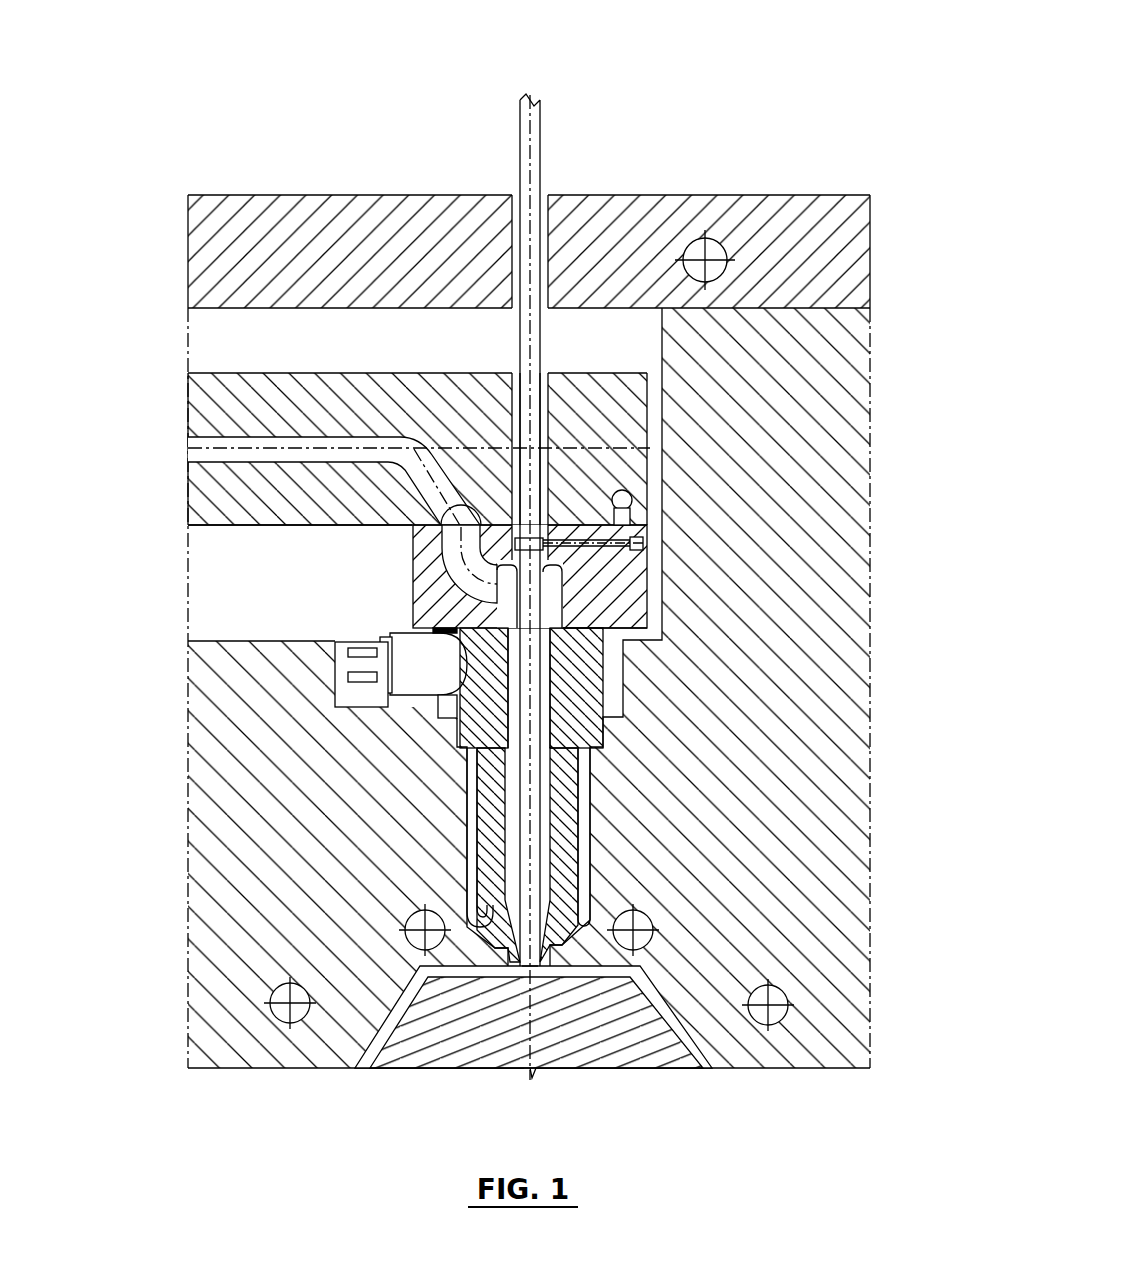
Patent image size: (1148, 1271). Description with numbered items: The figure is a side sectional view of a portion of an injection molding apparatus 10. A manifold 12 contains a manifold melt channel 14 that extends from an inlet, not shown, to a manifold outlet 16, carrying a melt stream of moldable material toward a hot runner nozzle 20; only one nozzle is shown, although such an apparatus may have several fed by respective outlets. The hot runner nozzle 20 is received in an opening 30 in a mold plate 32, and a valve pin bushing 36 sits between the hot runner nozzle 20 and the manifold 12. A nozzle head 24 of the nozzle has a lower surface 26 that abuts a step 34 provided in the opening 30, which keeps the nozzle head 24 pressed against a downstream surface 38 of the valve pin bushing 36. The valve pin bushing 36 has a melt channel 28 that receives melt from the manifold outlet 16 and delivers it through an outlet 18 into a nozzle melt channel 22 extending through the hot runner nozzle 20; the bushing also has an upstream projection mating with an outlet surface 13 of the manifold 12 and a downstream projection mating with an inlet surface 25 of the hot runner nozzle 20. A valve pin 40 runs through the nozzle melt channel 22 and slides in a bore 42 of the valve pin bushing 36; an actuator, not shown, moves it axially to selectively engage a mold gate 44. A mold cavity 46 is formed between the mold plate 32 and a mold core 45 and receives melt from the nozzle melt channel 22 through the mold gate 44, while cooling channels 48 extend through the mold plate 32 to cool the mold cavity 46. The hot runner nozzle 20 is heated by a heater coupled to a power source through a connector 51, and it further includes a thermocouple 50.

The injection molding apparatus 10 is at (236, 176).
The manifold 12 is at (210, 487).
The outlet surface 13 is at (235, 533).
The manifold melt channel 14 is at (205, 440).
The manifold outlet 16 is at (413, 553).
The outlet 18 is at (527, 795).
The hot runner nozzle 20 is at (573, 810).
The nozzle melt channel 22 is at (547, 905).
The nozzle head 24 is at (583, 687).
The inlet surface 25 is at (600, 613).
The lower surface 26 is at (600, 767).
The melt channel 28 is at (468, 580).
The opening 30 is at (583, 850).
The mold plate 32 is at (310, 832).
The step 34 is at (457, 737).
The valve pin bushing 36 is at (747, 688).
The downstream surface 38 is at (283, 688).
The valve pin 40 is at (535, 420).
The bore 42 is at (545, 543).
The mold gate 44 is at (530, 967).
The mold core 45 is at (497, 1037).
The mold cavity 46 is at (496, 1049).
The cooling channels 48 is at (790, 1005).
The thermocouple 50 is at (467, 850).
The connector 51 is at (393, 688).